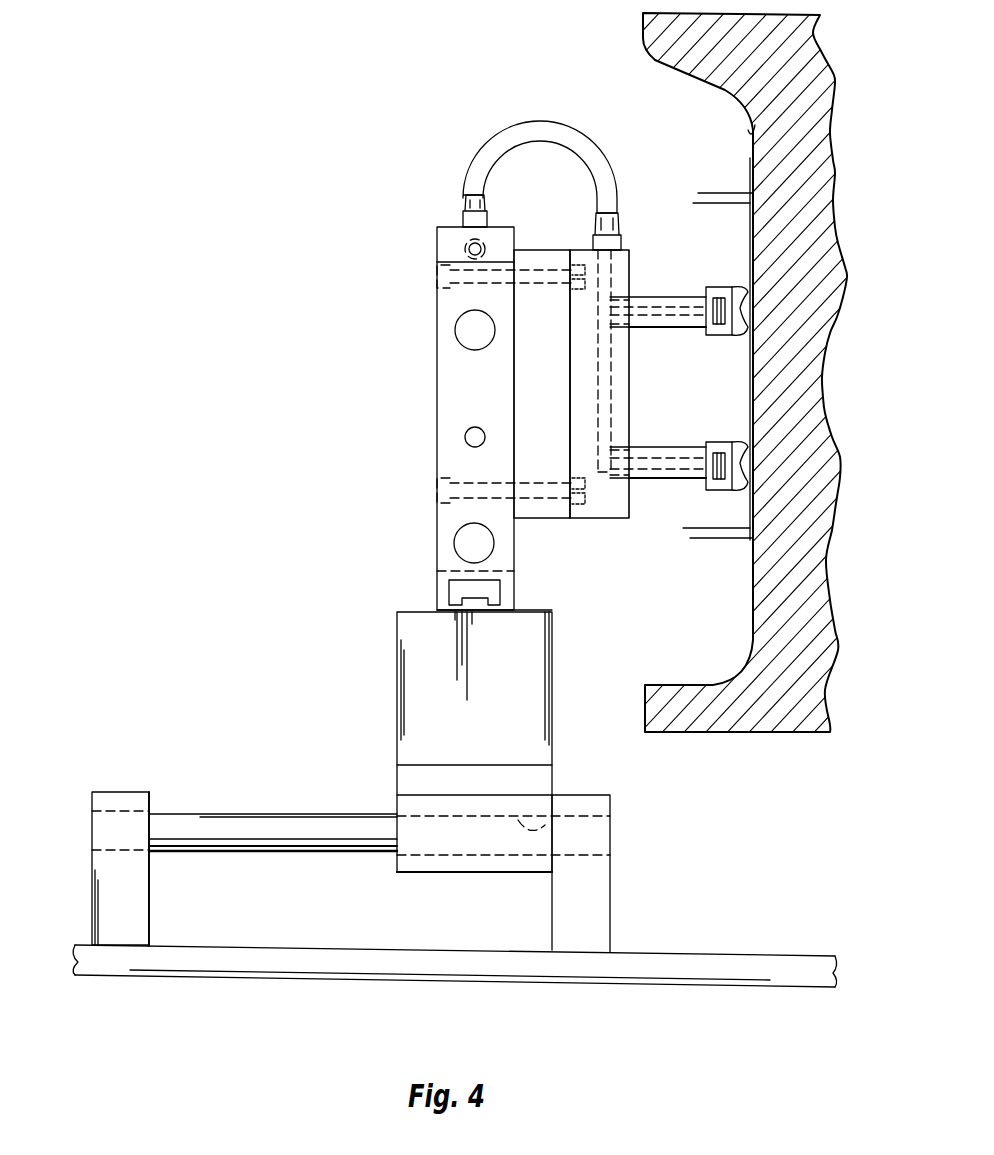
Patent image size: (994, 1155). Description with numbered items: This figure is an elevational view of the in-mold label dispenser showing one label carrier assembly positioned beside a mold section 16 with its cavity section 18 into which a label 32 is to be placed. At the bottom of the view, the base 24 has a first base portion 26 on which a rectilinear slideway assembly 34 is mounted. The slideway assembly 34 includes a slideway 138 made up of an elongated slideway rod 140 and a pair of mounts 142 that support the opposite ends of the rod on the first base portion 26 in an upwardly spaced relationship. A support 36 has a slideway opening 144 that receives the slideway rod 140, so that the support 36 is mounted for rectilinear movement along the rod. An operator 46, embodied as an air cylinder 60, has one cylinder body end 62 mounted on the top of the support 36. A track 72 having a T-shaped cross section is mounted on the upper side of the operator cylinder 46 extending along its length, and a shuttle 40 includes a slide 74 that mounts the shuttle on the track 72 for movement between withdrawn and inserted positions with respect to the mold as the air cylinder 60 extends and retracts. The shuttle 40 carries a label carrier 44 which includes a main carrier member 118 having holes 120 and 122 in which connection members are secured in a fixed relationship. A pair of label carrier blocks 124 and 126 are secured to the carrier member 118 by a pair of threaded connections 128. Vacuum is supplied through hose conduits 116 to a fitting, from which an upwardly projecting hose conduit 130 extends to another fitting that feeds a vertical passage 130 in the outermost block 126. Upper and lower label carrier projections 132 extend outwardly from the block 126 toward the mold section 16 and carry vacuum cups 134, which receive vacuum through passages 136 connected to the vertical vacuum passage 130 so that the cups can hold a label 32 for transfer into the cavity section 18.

The mold section 16 is at (652, 22).
The cavity section 18 is at (750, 132).
The base 24 is at (232, 978).
The first base portion 26 is at (288, 968).
The label 32 is at (750, 368).
The rectilinear slideway assembly 34 is at (91, 801).
The support 36 is at (396, 800).
The shuttle 40 is at (475, 388).
The label carrier 44 is at (589, 379).
The operator 46 is at (472, 781).
The air cylinder 60 is at (554, 648).
The cylinder body end 62 is at (410, 741).
The track 72 is at (455, 593).
The slide 74 is at (440, 585).
The hose conduit 116 is at (460, 249).
The main carrier member 118 is at (437, 365).
The hole 120 is at (462, 542).
The hole 122 is at (462, 330).
The label carrier block 124 is at (543, 520).
The label carrier block 126 is at (598, 520).
The threaded connection 128 is at (558, 286).
The hose conduit / vertical passage 130 is at (555, 128).
The label carrier projection 132 is at (670, 297).
The vacuum cup 134 is at (729, 290).
The passage 136 is at (648, 330).
The slideway 138 is at (149, 793).
The slideway rod 140 is at (280, 814).
The mount 142 is at (608, 893).
The slideway opening 144 is at (548, 812).